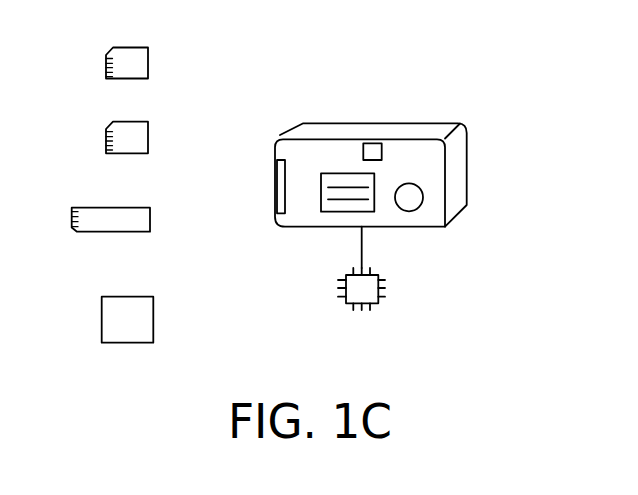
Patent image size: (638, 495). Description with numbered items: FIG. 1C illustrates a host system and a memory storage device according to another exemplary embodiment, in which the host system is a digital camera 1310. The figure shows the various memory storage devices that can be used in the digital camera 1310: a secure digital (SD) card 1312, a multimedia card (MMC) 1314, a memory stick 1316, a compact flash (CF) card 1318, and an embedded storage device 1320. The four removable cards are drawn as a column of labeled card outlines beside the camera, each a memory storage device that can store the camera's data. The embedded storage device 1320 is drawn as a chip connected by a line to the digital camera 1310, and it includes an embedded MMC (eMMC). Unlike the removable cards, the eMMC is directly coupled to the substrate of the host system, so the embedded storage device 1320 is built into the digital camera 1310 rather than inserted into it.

The digital camera 1310 is at (468, 163).
The secure digital (SD) card 1312 is at (148, 54).
The multimedia card (MMC) 1314 is at (148, 130).
The memory stick 1316 is at (150, 217).
The compact flash (CF) card 1318 is at (153, 312).
The embedded storage device 1320 is at (385, 288).